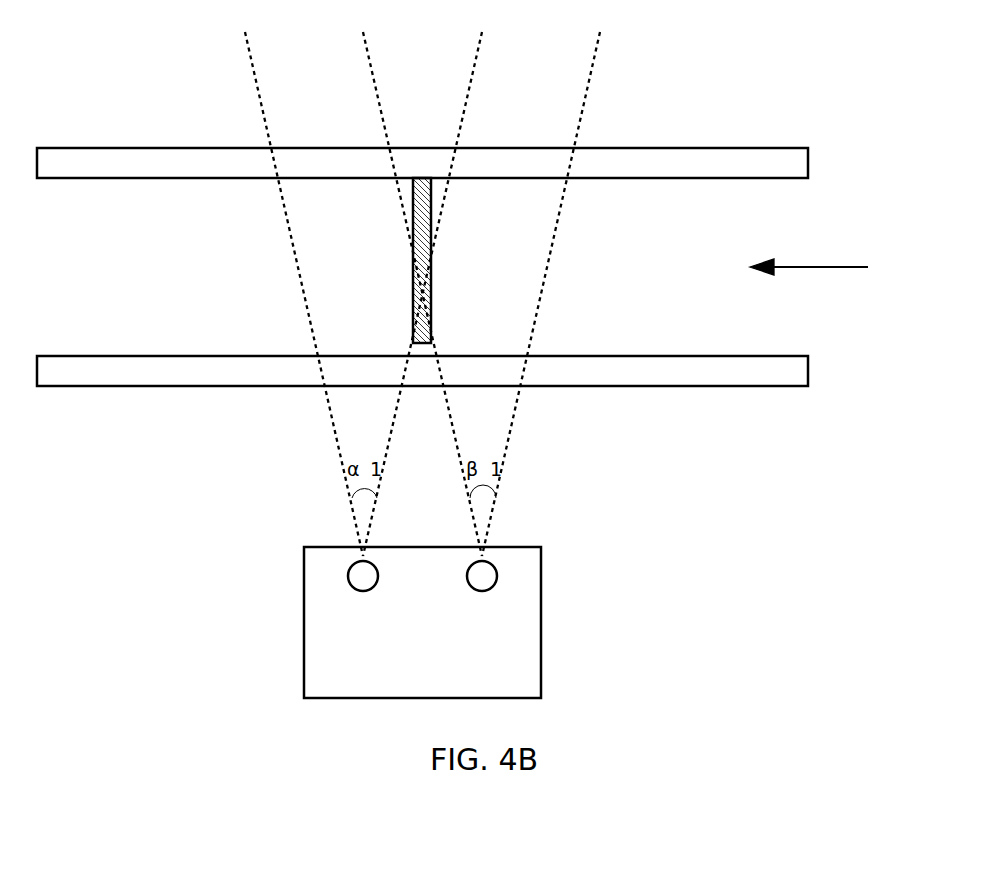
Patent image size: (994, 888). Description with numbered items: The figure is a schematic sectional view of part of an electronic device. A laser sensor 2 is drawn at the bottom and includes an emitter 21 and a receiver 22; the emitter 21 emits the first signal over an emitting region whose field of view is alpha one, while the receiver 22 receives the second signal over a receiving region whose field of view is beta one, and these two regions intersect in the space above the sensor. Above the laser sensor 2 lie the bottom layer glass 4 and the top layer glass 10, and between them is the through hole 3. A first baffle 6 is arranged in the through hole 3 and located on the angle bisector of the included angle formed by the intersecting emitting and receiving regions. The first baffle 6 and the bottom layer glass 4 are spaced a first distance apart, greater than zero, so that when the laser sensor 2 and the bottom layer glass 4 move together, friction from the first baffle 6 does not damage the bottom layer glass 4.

The top layer glass 10 is at (808, 162).
The bottom layer glass 4 is at (808, 370).
The first baffle 6 is at (431, 284).
The through hole 3 is at (826, 268).
The laser sensor 2 is at (541, 605).
The emitter 21 is at (363, 591).
The receiver 22 is at (482, 591).